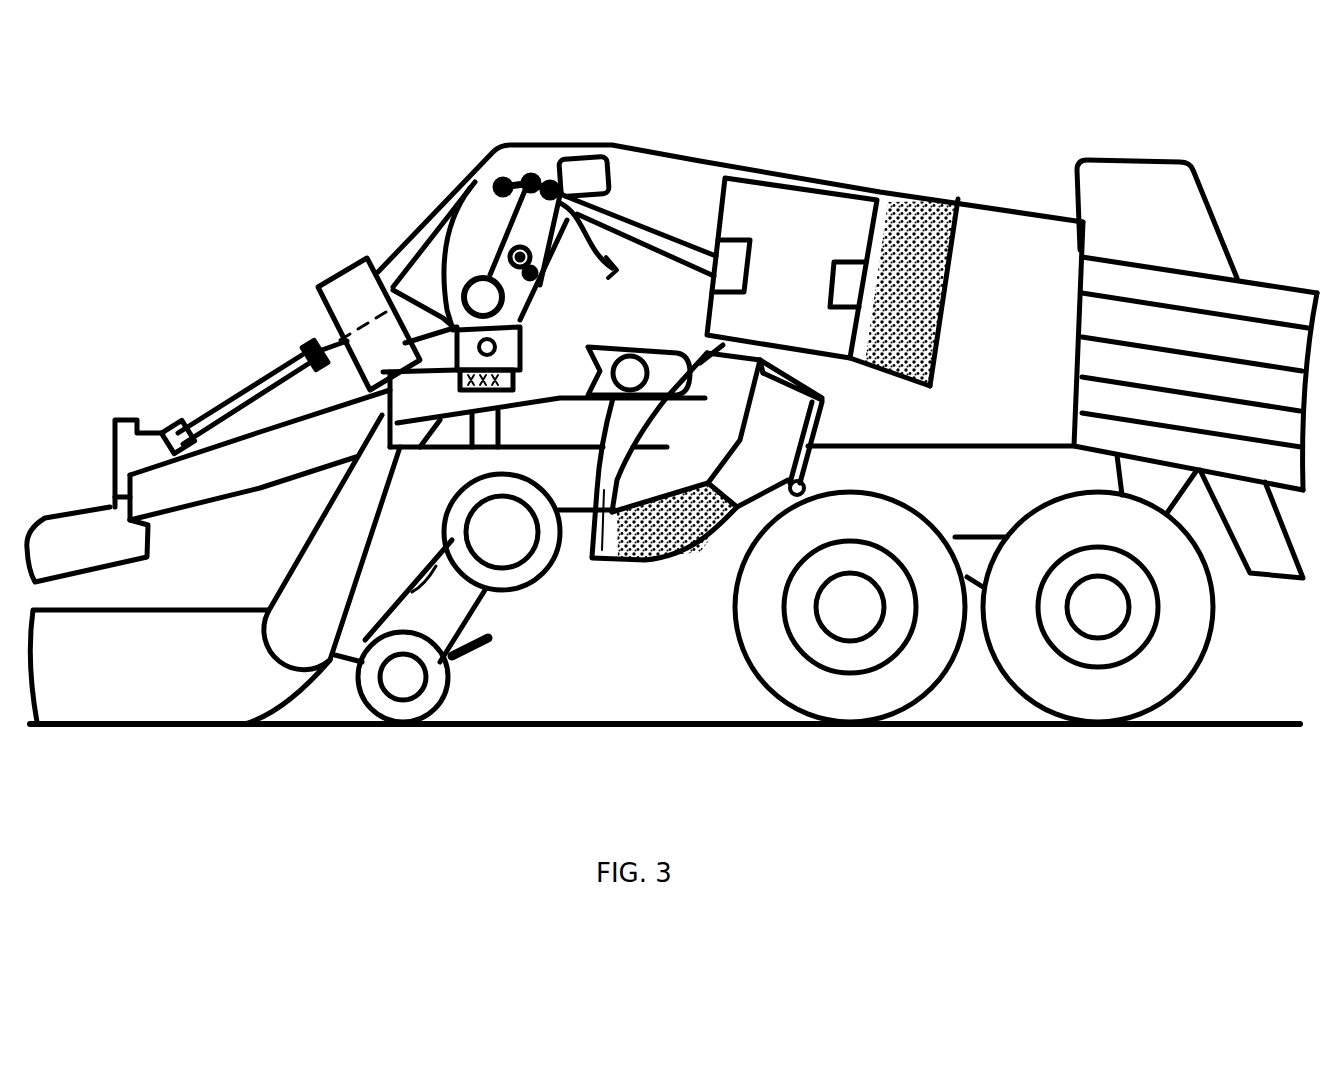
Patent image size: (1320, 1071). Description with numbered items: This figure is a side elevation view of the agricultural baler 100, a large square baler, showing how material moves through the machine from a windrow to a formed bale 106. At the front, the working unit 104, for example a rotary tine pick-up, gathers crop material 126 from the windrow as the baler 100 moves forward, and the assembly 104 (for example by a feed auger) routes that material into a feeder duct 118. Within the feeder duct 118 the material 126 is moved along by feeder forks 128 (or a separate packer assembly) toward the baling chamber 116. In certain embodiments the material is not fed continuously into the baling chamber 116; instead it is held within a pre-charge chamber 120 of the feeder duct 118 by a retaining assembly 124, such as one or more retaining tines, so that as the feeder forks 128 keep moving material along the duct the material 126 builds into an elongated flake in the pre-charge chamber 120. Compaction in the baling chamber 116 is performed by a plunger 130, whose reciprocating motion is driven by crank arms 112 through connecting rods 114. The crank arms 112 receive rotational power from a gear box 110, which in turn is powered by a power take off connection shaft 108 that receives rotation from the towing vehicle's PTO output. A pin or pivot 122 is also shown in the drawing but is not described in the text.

The agricultural baler 100 is at (174, 124).
The working unit 104 is at (328, 680).
The formed bale 106 is at (913, 197).
The power take off connection shaft 108 is at (220, 400).
The gear box 110 is at (470, 257).
The crank arms 112 is at (538, 228).
The connecting rods 114 is at (647, 240).
The baling chamber 116 is at (1006, 147).
The feeder duct 118 is at (640, 582).
The pre-charge chamber 120 is at (777, 455).
The pivot bracket 122 is at (630, 352).
The retaining assembly 124 is at (818, 422).
The crop material 126 is at (677, 565).
The feeder forks 128 is at (587, 567).
The plunger 130 is at (805, 237).